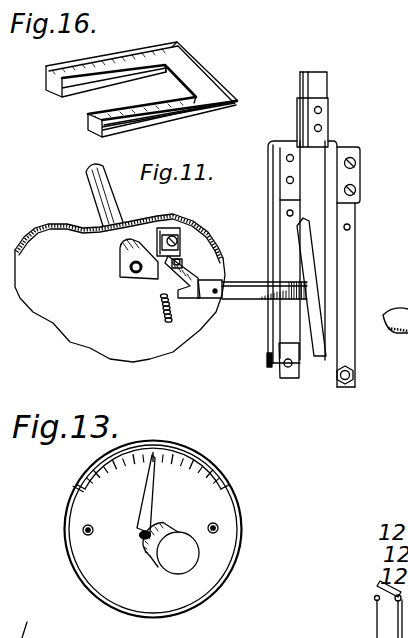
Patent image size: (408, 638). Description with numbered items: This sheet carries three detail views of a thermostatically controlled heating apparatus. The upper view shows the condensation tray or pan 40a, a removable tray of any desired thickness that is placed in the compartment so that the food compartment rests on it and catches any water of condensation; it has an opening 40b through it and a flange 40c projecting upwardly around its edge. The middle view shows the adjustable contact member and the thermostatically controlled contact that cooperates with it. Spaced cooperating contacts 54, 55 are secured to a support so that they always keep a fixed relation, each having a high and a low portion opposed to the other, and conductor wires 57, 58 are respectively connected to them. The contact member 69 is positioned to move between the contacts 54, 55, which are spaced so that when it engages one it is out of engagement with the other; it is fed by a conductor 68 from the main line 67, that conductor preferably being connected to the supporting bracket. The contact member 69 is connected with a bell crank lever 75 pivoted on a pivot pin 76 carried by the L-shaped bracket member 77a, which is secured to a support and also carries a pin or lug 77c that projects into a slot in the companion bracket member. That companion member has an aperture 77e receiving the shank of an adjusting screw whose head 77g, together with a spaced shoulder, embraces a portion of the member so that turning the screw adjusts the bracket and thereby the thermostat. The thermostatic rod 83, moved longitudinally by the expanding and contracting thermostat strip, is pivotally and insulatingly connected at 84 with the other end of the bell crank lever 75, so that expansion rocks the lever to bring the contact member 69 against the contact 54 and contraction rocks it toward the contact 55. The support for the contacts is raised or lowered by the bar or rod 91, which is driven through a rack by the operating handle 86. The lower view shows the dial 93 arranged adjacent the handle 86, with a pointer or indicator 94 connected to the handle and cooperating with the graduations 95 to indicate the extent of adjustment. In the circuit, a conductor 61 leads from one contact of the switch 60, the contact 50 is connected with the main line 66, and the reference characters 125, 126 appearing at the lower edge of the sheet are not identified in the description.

In FIG. 16, the tray or pan 40a is at (191, 75).
In FIG. 16, the opening 40b is at (152, 88).
In FIG. 16, the flange 40c is at (138, 54).
In FIG. 11, the thermostatic rod 83 is at (95, 204).
In FIG. 11, the bracket member 77a is at (157, 228).
In FIG. 11, the pin or lug 77c is at (133, 232).
In FIG. 11, the aperture 77e is at (179, 233).
In FIG. 11, the screw head 77g is at (185, 240).
In FIG. 11, the pivot pin 76 is at (184, 263).
In FIG. 11, the pivotal connection 84 is at (122, 268).
In FIG. 11, the bell crank lever 75 is at (154, 270).
In FIG. 11, the contact member 69 is at (236, 292).
In FIG. 11, the conductor 68 is at (168, 323).
In FIG. 11, the bar or rod 91 is at (308, 60).
In FIG. 11, the contact 50 is at (341, 147).
In FIG. 11, the contact 55 is at (318, 289).
In FIG. 11, the contact 54 is at (305, 327).
In FIG. 11, the conductor wire 57 is at (260, 381).
In FIG. 11, the conductor wire 58 is at (348, 388).
In FIG. 13, the dial 93 is at (237, 520).
In FIG. 13, the graduations 95 is at (196, 463).
In FIG. 13, the pointer or indicator 94 is at (152, 500).
In FIG. 13, the operating handle 86 is at (176, 562).
In FIG. 13, the element 125 is at (88, 626).
In FIG. 13, the element 126 is at (158, 627).
In FIG. 13, the main line 66 is at (206, 625).
In FIG. 13, the main line 67 is at (314, 565).
In FIG. 13, the switch 60 is at (377, 592).
In FIG. 13, the conductor 61 is at (377, 623).